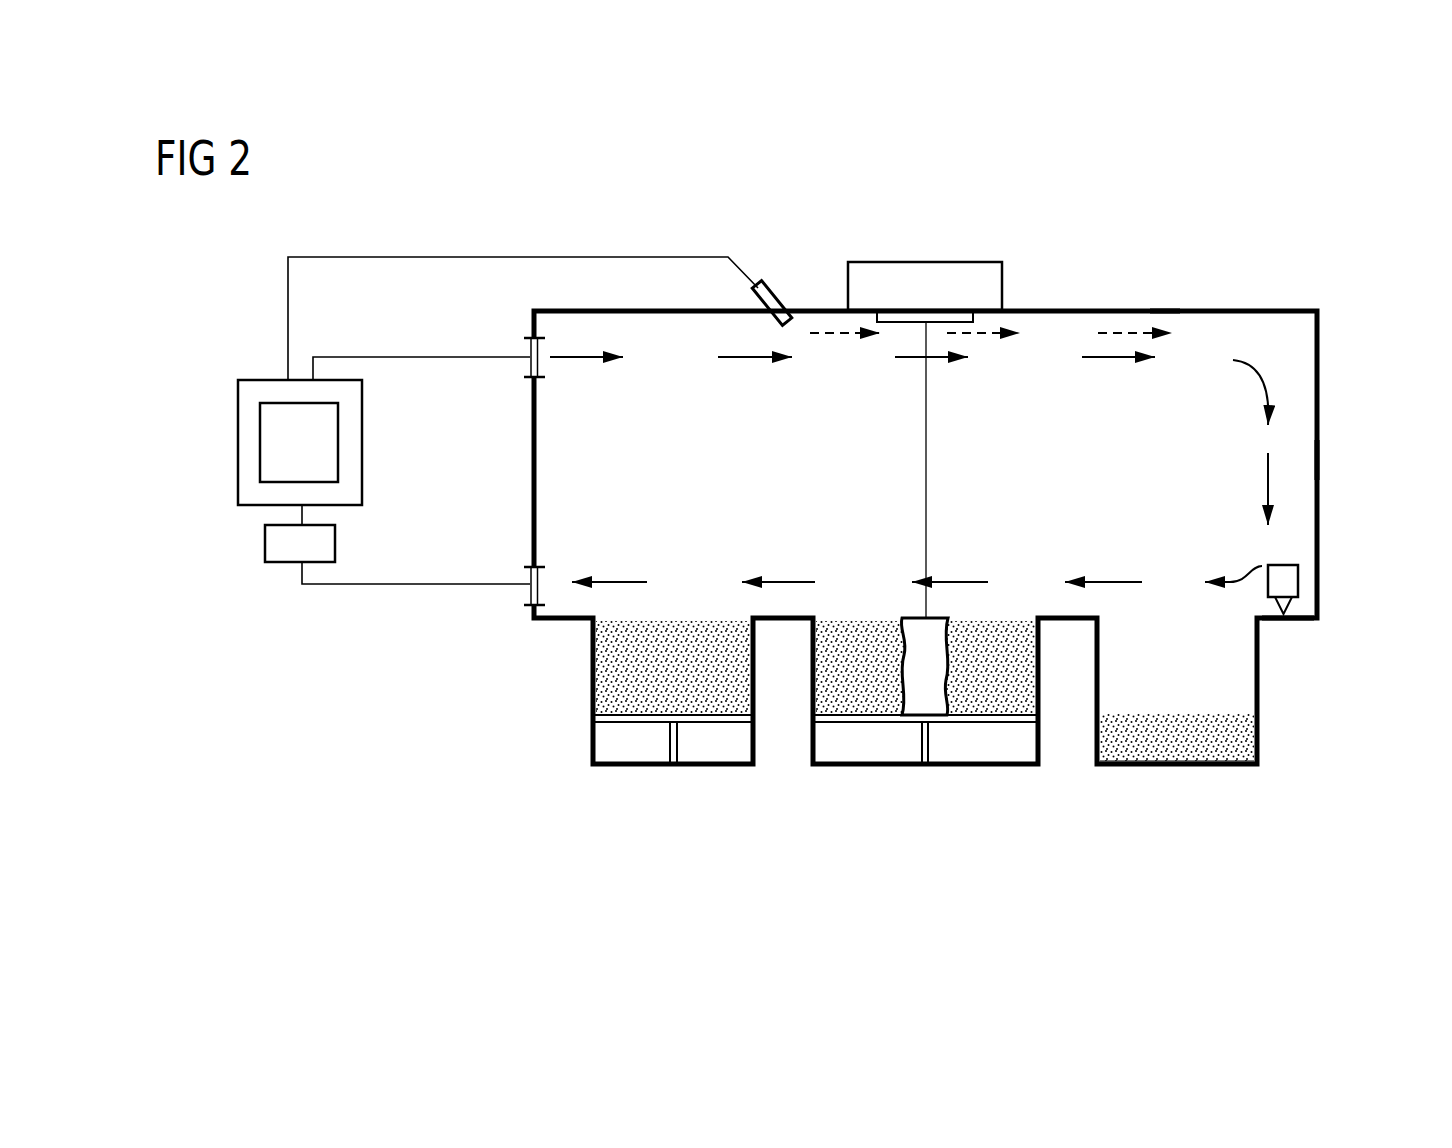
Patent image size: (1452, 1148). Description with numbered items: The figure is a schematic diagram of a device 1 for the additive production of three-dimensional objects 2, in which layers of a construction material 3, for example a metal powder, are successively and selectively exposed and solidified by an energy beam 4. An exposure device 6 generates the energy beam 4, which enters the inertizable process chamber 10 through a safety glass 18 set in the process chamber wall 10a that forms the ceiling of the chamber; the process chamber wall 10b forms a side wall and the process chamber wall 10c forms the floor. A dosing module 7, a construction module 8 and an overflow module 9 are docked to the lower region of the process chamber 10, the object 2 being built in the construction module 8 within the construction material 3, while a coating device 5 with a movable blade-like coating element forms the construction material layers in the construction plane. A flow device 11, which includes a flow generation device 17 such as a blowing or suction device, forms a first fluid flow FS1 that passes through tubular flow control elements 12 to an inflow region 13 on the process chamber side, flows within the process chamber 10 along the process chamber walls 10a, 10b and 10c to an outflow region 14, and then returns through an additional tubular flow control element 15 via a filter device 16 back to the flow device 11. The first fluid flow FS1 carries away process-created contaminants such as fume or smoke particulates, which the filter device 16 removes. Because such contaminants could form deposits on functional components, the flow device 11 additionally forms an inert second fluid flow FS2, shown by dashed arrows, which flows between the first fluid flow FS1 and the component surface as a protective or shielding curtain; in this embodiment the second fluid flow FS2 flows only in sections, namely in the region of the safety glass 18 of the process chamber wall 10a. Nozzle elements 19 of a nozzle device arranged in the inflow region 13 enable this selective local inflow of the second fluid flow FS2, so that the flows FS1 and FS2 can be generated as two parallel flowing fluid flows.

The device 1 is at (1322, 227).
The three-dimensional object 2 is at (937, 687).
The construction material 3 is at (592, 658).
The energy beam 4 is at (928, 468).
The coating device 5 is at (1300, 583).
The exposure device 6 is at (927, 260).
The dosing module 7 is at (645, 783).
The construction module 8 is at (890, 783).
The overflow module 9 is at (1190, 783).
The process chamber 10 is at (1345, 345).
The process chamber wall 10a is at (1156, 308).
The process chamber wall 10b is at (1320, 458).
The process chamber wall 10c is at (1305, 622).
The flow device 11 is at (236, 467).
The tubular flow control element 12 is at (433, 255).
The inflow region 13 is at (522, 345).
The outflow region 14 is at (518, 598).
The tubular flow control element 15 is at (430, 586).
The filter device 16 is at (265, 545).
The flow generation device 17 is at (270, 425).
The safety glass 18 is at (975, 313).
The nozzle element 19 is at (779, 297).
The first fluid flow FS1 is at (740, 355).
The second fluid flow FS2 is at (832, 330).